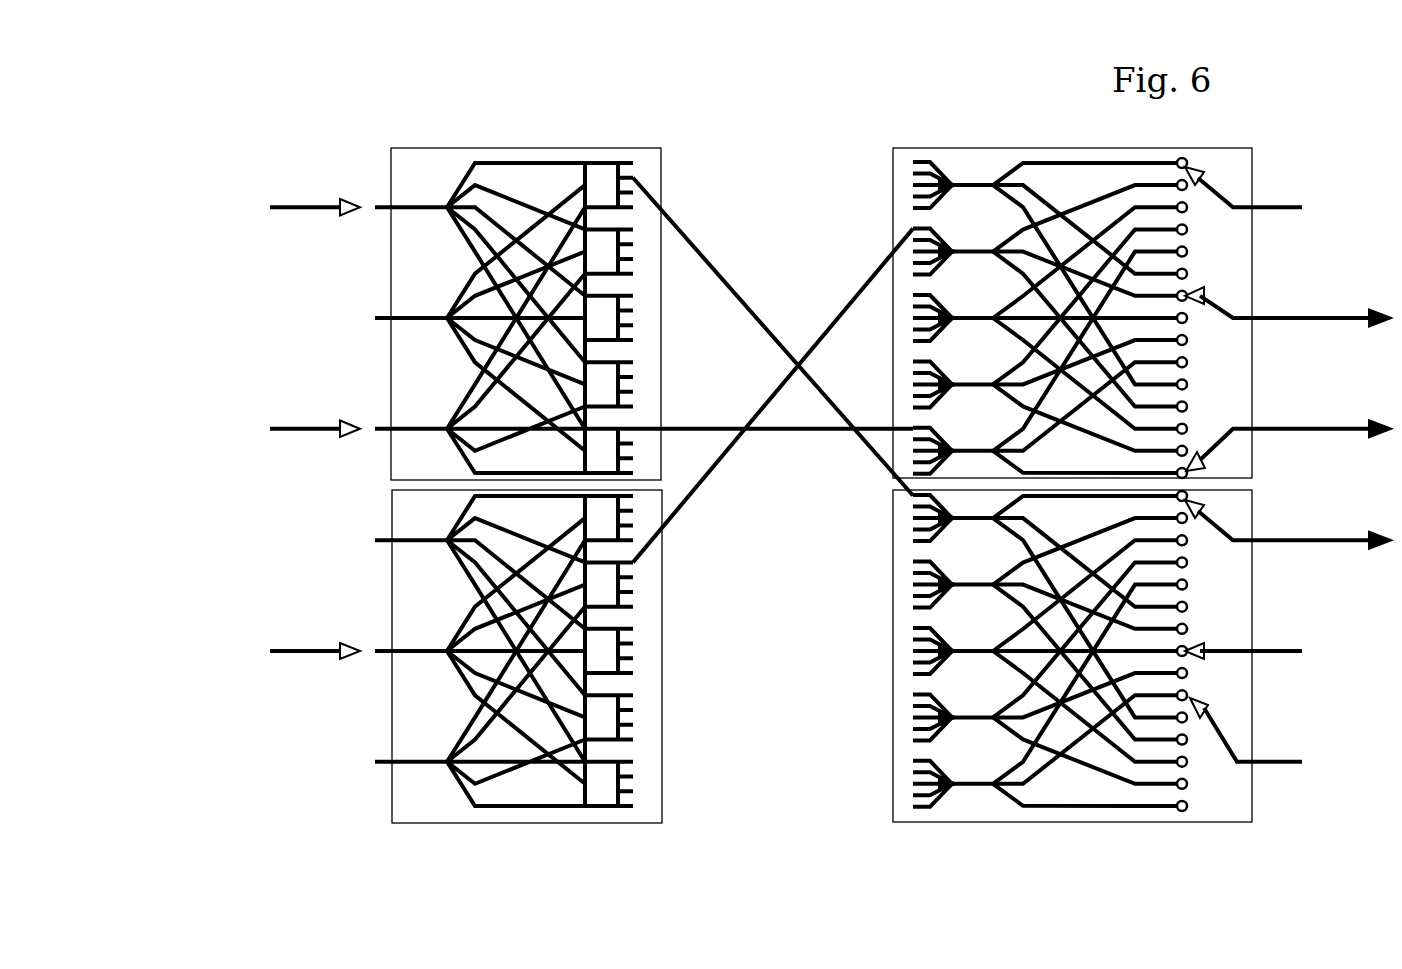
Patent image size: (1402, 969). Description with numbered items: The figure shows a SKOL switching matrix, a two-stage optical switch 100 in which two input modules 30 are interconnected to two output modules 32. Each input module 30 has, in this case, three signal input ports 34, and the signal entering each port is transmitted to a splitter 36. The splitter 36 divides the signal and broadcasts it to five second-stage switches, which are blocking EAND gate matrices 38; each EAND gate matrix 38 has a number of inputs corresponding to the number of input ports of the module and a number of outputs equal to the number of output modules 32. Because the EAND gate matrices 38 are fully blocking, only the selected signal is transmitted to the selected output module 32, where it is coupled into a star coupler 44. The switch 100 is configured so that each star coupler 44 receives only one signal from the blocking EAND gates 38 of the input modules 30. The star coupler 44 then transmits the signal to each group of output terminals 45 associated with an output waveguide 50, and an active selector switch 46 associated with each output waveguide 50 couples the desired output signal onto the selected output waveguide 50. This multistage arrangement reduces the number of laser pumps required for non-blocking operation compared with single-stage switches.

The switch 100 is at (375, 107).
The input module 30 is at (415, 455).
The output module 32 is at (1240, 453).
The signal input port 34 is at (378, 318).
The splitter 36 is at (516, 318).
The EAND gate matrix 38 is at (609, 318).
The star coupler 44 is at (936, 318).
The output terminal 45 is at (1182, 318).
The active selector switch 46 is at (1283, 761).
The output waveguide 50 is at (1335, 545).